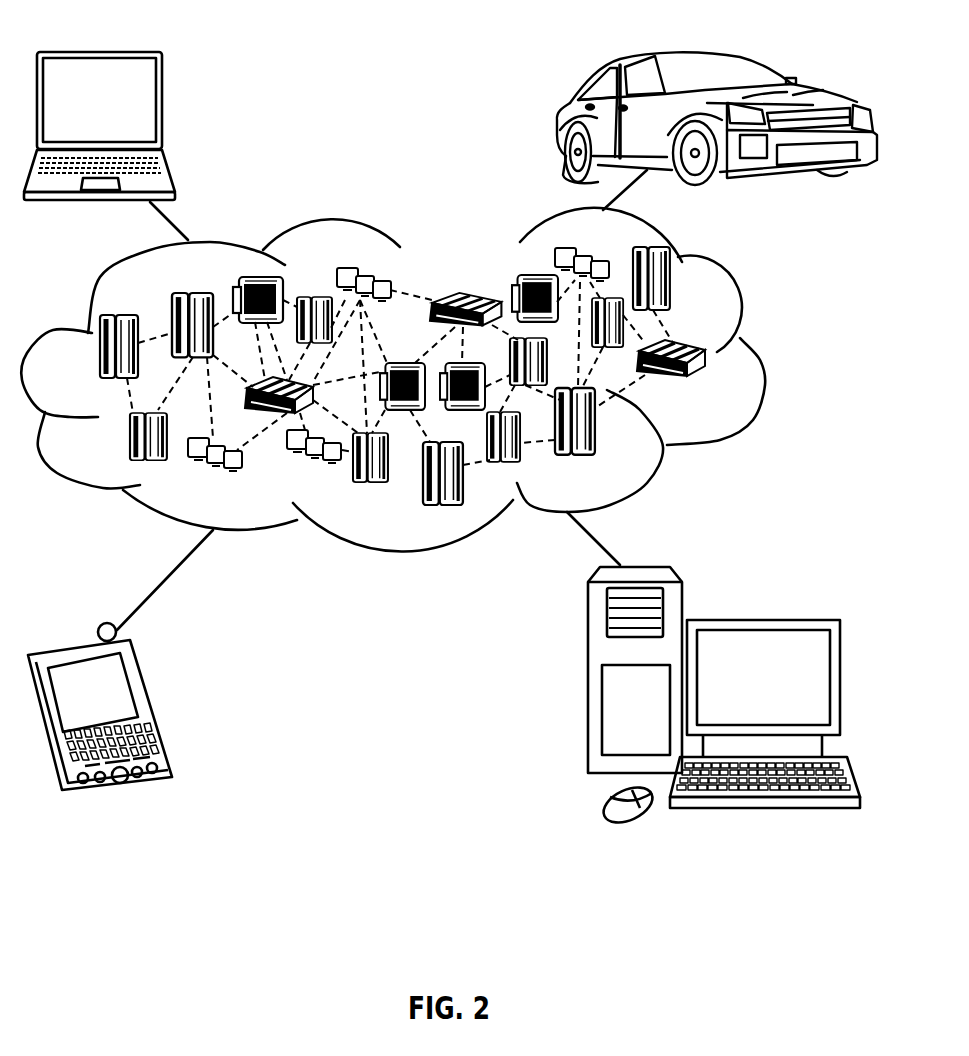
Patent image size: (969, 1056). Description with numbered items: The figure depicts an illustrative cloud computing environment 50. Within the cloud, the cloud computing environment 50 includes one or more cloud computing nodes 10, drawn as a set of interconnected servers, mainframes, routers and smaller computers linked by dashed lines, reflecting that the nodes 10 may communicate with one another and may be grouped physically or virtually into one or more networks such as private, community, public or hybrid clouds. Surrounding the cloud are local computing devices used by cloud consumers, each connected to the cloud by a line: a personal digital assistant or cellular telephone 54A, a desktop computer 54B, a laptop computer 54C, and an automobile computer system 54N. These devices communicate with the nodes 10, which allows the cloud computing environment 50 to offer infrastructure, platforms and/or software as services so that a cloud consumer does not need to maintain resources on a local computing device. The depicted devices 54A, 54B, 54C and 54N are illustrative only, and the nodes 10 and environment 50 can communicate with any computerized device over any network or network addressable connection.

The cloud computing nodes 10 is at (710, 385).
The cloud computing environment 50 is at (760, 357).
The personal digital assistant or cellular telephone 54A is at (150, 703).
The desktop computer 54B is at (760, 620).
The laptop computer 54C is at (162, 110).
The automobile computer system 54N is at (560, 122).